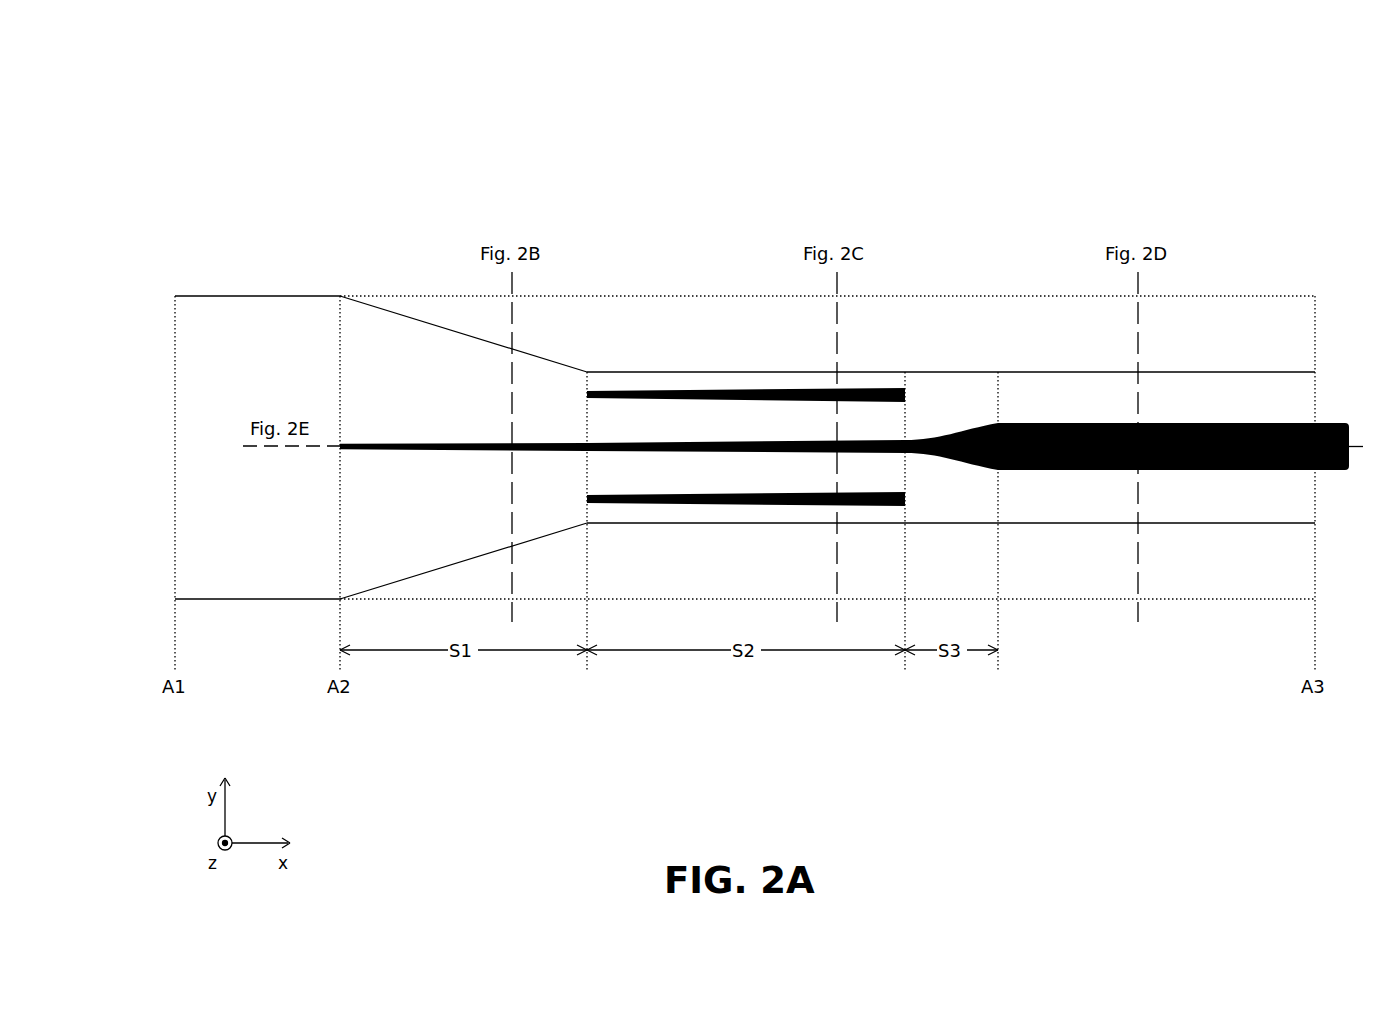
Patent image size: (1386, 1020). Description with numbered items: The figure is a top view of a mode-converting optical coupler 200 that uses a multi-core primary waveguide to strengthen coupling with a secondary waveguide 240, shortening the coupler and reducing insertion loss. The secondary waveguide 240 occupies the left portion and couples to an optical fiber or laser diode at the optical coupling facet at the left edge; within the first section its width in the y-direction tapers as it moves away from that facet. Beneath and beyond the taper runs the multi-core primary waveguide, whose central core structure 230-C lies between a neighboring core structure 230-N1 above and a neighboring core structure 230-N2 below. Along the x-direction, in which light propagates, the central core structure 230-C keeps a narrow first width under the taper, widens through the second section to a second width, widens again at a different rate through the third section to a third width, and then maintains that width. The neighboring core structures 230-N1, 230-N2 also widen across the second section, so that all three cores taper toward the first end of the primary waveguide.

The mode-converting optical coupler 200 is at (270, 68).
The secondary waveguide 240 is at (262, 342).
The central core structure 230-C is at (461, 441).
The neighboring core structure 230-N1 is at (746, 389).
The neighboring core structure 230-N2 is at (746, 506).